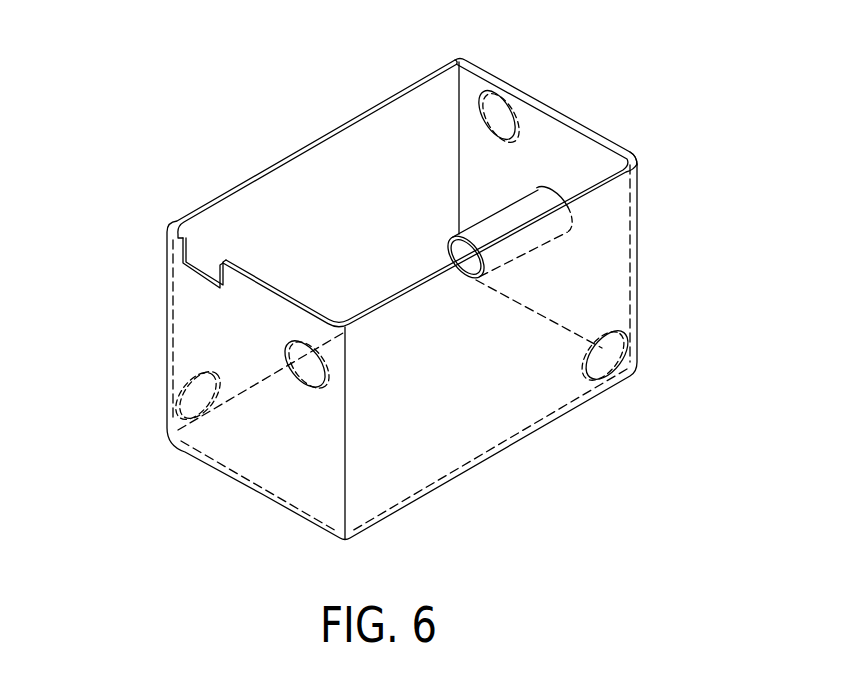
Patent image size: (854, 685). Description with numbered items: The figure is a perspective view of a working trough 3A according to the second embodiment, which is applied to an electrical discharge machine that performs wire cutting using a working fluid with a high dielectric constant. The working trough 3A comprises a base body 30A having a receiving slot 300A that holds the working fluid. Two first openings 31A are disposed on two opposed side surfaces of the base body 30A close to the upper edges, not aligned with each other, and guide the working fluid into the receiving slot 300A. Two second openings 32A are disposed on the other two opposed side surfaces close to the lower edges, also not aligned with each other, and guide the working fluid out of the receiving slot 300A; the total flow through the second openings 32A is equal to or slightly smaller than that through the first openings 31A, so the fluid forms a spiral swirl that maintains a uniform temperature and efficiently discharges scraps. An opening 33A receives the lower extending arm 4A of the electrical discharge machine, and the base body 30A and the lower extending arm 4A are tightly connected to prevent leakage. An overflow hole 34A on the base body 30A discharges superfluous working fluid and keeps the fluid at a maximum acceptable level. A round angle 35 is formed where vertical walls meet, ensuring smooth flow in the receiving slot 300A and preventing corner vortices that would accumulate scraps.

The working trough 3A is at (398, 282).
The receiving slot 300A is at (363, 207).
The base body 30A is at (272, 160).
The overflow hole 34A is at (202, 260).
The round angle 35 is at (614, 163).
The first opening 31A is at (497, 117).
The second opening 32A is at (203, 397).
The lower extending arm 4A is at (515, 156).
The opening 33A is at (531, 194).